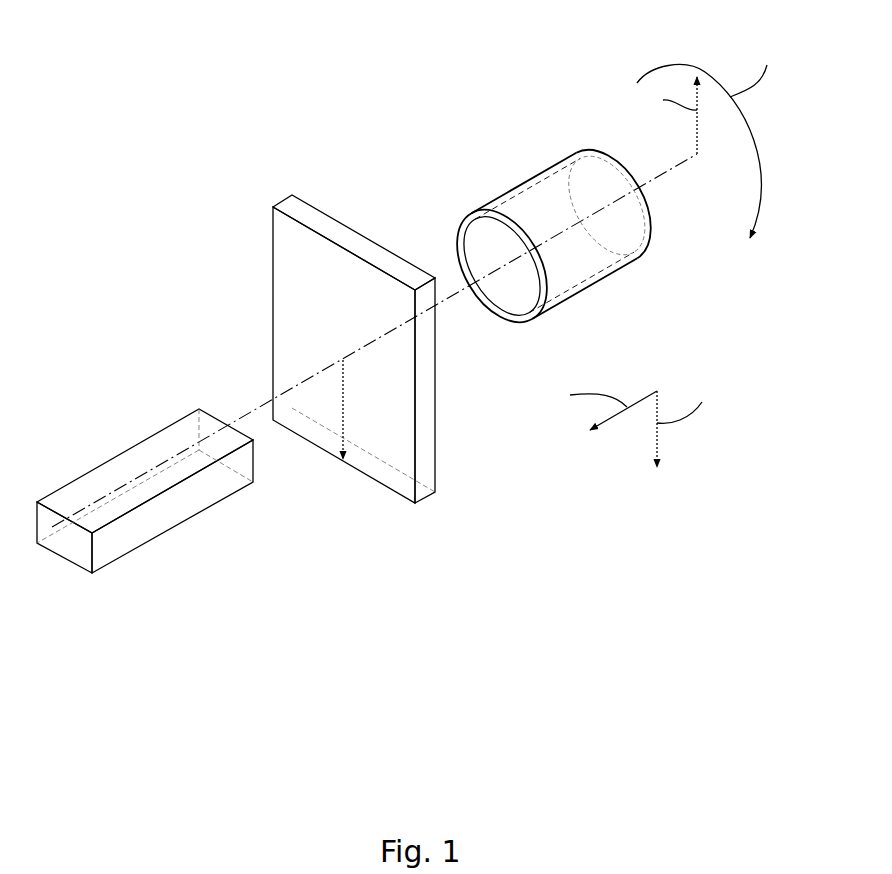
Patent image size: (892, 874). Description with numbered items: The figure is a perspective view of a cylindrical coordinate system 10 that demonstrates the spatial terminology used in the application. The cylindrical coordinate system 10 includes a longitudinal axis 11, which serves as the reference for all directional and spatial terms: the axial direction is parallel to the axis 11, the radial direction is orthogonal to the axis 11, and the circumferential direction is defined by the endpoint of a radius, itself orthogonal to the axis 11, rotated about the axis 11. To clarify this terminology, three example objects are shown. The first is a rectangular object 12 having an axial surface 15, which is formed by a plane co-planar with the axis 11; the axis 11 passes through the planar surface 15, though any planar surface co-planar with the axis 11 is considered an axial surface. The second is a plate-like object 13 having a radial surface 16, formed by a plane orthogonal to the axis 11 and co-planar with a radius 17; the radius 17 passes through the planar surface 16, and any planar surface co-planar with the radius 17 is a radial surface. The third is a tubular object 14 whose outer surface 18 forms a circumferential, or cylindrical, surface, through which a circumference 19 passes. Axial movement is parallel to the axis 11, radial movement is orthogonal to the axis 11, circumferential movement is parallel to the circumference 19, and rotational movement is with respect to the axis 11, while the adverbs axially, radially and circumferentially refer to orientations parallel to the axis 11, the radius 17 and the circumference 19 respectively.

The cylindrical coordinate system 10 is at (232, 240).
The longitudinal axis 11 is at (640, 180).
The object 12 is at (145, 518).
The object 13 is at (351, 367).
The object 14 is at (519, 247).
The axial surface 15 is at (110, 477).
The radial surface 16 is at (285, 312).
The radius 17 is at (343, 402).
The circumferential surface 18 is at (525, 182).
The circumference 19 is at (457, 237).